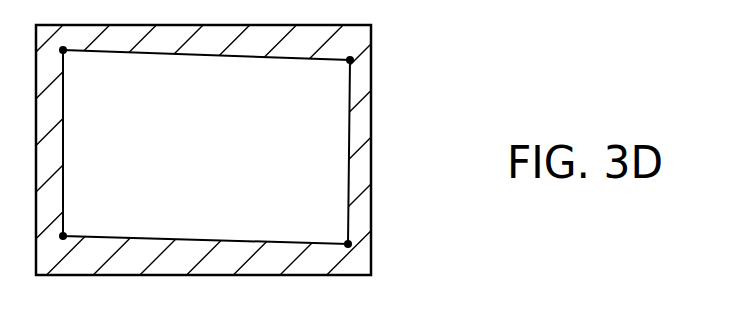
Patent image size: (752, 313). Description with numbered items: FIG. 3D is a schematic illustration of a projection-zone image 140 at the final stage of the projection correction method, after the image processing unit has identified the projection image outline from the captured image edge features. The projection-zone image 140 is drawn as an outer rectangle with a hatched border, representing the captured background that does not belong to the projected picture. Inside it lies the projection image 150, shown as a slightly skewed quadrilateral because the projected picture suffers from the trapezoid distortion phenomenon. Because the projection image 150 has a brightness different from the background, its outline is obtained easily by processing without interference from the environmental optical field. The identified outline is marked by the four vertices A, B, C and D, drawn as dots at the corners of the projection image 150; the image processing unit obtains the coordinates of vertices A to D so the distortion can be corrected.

The projection-zone image 140 is at (371, 104).
The projection image 150 is at (348, 155).
The vertex A is at (73, 65).
The vertex B is at (338, 73).
The vertex C is at (73, 223).
The vertex D is at (337, 229).